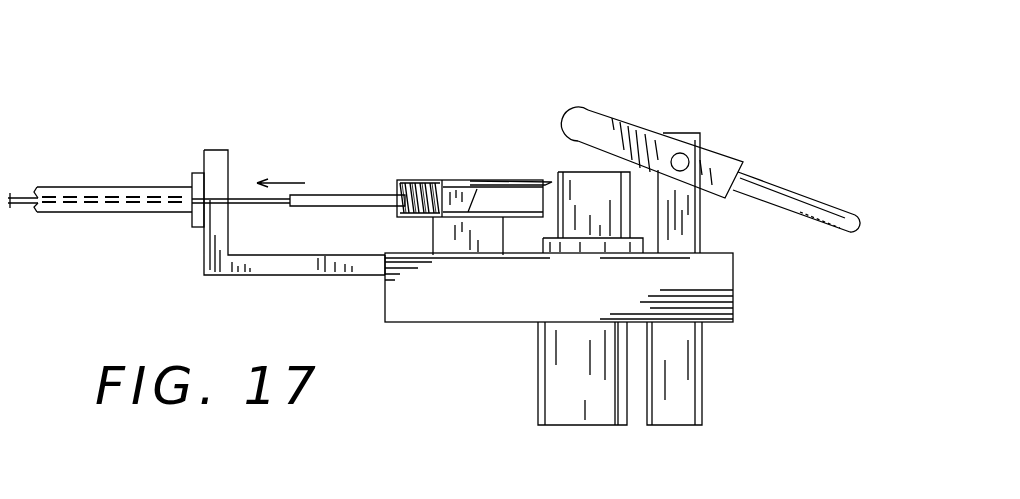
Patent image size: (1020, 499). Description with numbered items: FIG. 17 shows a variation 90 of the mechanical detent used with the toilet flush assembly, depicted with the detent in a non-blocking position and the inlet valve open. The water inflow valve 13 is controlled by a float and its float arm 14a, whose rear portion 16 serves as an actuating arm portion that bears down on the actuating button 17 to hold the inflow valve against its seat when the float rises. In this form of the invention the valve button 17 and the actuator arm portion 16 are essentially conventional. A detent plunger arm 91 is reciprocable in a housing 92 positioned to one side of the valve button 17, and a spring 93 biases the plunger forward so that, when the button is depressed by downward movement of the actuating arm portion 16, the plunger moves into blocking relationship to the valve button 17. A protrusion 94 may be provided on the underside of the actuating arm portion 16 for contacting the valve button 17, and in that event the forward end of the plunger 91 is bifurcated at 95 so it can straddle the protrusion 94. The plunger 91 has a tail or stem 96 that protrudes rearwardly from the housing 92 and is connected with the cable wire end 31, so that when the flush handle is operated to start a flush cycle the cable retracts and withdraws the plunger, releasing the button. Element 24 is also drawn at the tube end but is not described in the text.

The water inflow valve 13 is at (733, 285).
The float arm 14a is at (790, 188).
The rear portion of the float arm 16 is at (622, 120).
The actuating button 17 is at (607, 195).
The tube 24 is at (92, 187).
The cable wire end 31 is at (238, 190).
The mechanical detent variation 90 is at (470, 327).
The detent plunger arm 91 is at (453, 185).
The housing 92 is at (407, 180).
The spring 93 is at (417, 178).
The protrusion 94 is at (572, 146).
The bifurcated forward end 95 is at (522, 180).
The tail or stem 96 is at (325, 192).